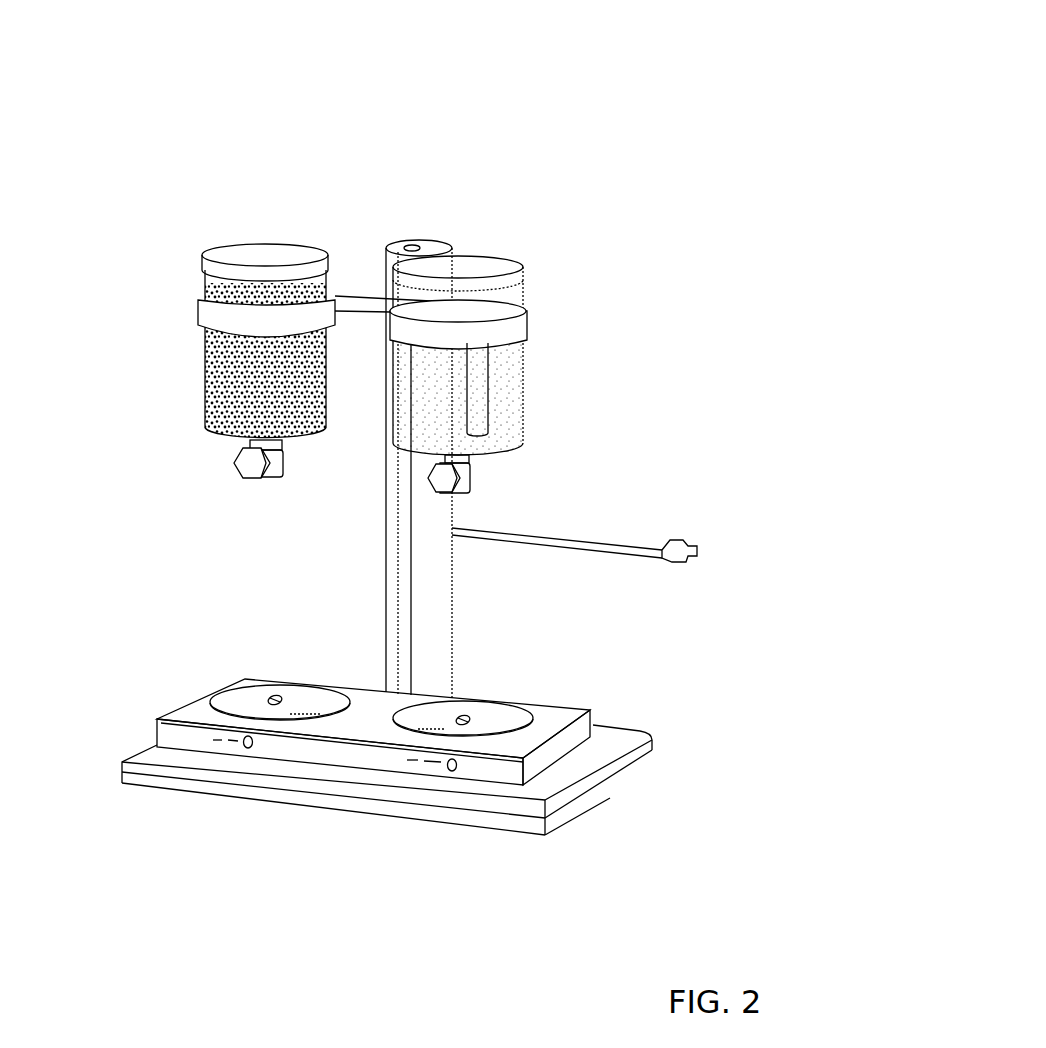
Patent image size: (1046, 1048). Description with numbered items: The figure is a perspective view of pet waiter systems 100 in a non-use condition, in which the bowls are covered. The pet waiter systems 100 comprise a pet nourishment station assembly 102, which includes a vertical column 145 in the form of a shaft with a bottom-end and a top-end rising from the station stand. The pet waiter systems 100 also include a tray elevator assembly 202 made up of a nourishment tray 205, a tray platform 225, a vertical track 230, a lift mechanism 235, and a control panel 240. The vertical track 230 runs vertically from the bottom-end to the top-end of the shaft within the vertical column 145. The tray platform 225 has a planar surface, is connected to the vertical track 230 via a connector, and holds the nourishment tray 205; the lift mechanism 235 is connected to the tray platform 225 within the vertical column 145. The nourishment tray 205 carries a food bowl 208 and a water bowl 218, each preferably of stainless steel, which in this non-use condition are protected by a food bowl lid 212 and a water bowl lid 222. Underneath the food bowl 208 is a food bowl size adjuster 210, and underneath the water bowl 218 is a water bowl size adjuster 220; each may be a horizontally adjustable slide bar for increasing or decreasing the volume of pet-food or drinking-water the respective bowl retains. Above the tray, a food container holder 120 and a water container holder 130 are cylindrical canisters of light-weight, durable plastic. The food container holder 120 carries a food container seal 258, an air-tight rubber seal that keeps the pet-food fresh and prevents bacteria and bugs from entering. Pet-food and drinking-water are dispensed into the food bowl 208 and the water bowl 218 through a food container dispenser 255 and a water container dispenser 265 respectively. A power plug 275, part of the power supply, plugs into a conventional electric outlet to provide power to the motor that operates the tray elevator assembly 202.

The pet waiter systems 100 is at (597, 75).
The pet nourishment station assembly 102 is at (627, 105).
The tray elevator assembly 202 is at (667, 150).
The food container holder 120 is at (276, 313).
The water container holder 130 is at (503, 357).
The vertical column 145 is at (386, 578).
The nourishment tray 205 is at (390, 709).
The food bowl 208 is at (259, 664).
The food bowl size adjuster 210 is at (248, 750).
The food bowl lid 212 is at (307, 703).
The water bowl 218 is at (493, 688).
The water bowl size adjuster 220 is at (452, 773).
The water bowl lid 222 is at (435, 718).
The tray platform 225 is at (553, 750).
The vertical track 230 is at (406, 552).
The lift mechanism 235 is at (474, 408).
The control panel 240 is at (418, 243).
The food container dispenser 255 is at (236, 463).
The food container seal 258 is at (255, 260).
The water container dispenser 265 is at (429, 487).
The power plug 275 is at (677, 543).